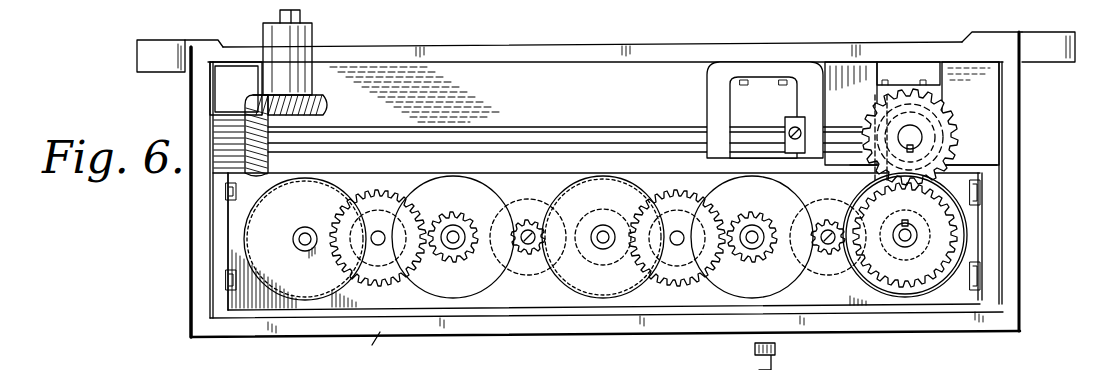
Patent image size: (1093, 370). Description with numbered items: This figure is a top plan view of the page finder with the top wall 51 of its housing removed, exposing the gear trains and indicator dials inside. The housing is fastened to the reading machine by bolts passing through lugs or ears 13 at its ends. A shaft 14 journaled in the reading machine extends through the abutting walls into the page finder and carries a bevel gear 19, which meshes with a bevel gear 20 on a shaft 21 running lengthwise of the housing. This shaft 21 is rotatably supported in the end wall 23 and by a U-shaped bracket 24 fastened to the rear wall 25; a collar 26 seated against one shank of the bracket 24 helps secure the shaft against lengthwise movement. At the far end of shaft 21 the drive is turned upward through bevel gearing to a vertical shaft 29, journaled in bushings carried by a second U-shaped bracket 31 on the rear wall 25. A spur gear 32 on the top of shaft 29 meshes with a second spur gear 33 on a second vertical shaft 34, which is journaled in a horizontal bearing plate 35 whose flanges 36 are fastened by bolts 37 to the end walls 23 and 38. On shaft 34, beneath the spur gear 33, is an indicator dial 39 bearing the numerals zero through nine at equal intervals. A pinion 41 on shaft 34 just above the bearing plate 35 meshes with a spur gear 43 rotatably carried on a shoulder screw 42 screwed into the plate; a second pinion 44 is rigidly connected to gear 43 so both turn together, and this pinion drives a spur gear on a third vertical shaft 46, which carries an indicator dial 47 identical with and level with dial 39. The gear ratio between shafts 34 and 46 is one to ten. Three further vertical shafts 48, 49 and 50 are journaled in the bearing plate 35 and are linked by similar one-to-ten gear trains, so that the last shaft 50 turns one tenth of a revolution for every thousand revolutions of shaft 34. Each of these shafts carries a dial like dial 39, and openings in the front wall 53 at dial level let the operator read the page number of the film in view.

The lugs or ears 13 is at (137, 52).
The shaft 14 is at (302, 15).
The bevel gear 19 is at (323, 112).
The bevel gear 20 is at (272, 166).
The shaft 21 is at (600, 135).
The end wall 23 is at (190, 93).
The U-shaped bracket 24 is at (770, 66).
The rear wall 25 is at (576, 43).
The collar 26 is at (791, 118).
The vertical shaft 29 is at (913, 134).
The second U-shaped bracket 31 is at (907, 64).
The spur gear 32 is at (936, 113).
The second spur gear 33 is at (328, 198).
The second vertical shaft 34 is at (904, 248).
The horizontal bearing plate 35 is at (228, 194).
The flanges 36 is at (220, 247).
The bolts 37 is at (227, 275).
The end wall 38 is at (1017, 157).
The indicator dial 39 is at (962, 238).
The pinion 41 is at (458, 230).
The shoulder screw 42 is at (827, 256).
The spur gear 43 is at (385, 197).
The second pinion 44 is at (836, 200).
The third vertical shaft 46 is at (753, 350).
The indicator dial 47 is at (742, 268).
The vertical shaft 48 is at (600, 250).
The vertical shaft 49 is at (455, 246).
The vertical shaft 50 is at (302, 248).
The top wall 51 is at (367, 351).
The front wall 53 is at (303, 322).